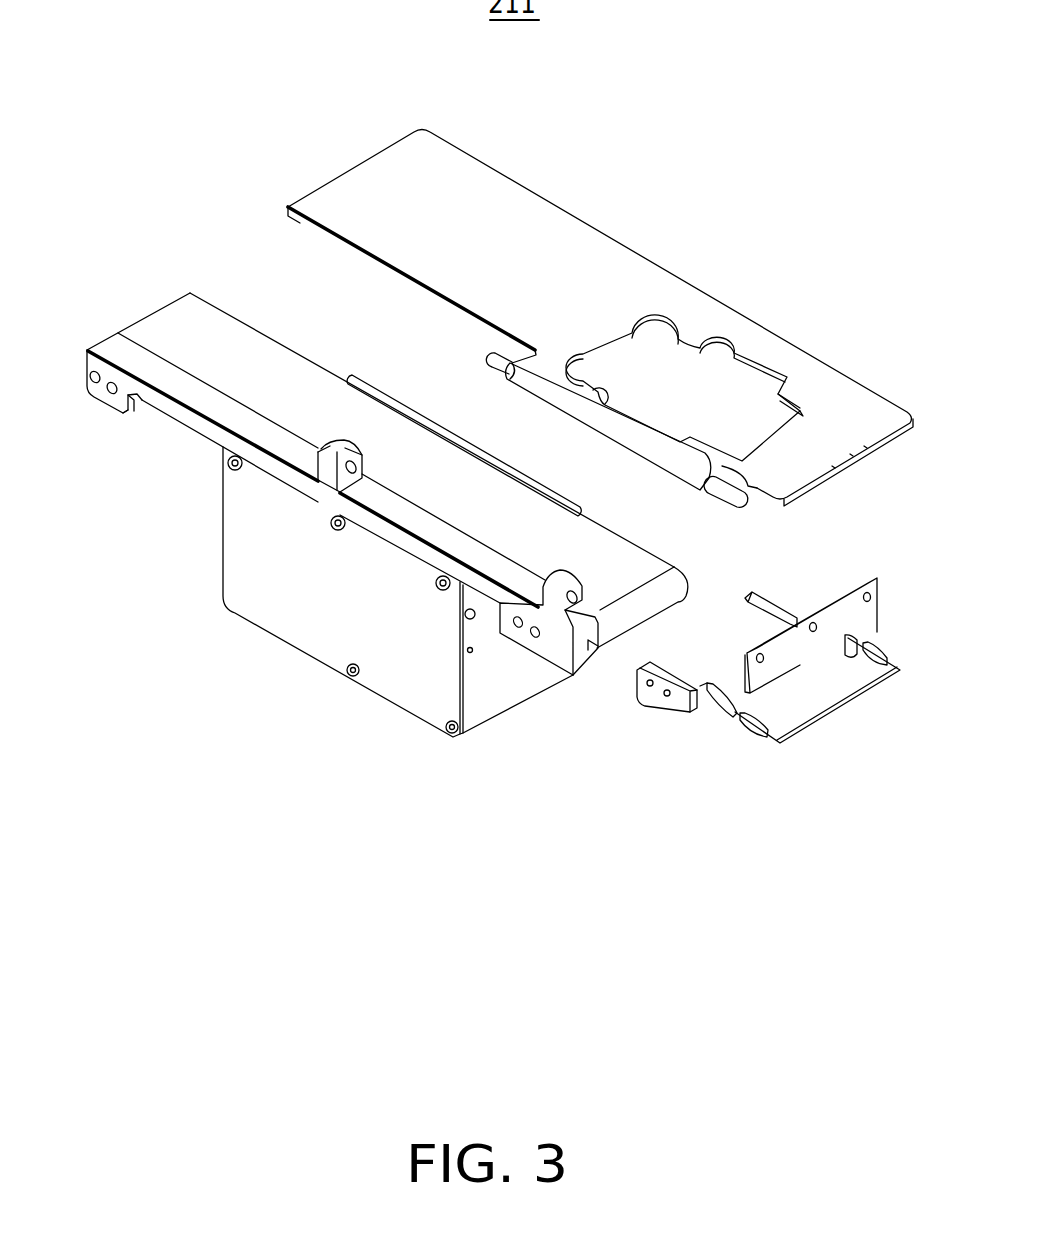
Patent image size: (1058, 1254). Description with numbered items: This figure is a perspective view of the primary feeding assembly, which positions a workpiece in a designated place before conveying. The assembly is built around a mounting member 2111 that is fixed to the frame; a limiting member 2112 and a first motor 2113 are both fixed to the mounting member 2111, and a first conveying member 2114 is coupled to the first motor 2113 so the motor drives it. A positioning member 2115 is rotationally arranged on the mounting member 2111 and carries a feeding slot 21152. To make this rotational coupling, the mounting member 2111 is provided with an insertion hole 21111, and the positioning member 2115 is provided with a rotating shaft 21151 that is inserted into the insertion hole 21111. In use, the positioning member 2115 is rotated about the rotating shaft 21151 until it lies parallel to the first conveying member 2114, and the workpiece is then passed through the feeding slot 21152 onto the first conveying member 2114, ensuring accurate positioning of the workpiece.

The mounting member 2111 is at (545, 648).
The insertion hole 21111 is at (343, 480).
The limiting member 2112 is at (818, 690).
The first motor 2113 is at (248, 554).
The first conveying member 2114 is at (387, 483).
The positioning member 2115 is at (600, 295).
The rotating shaft 21151 is at (745, 497).
The feeding slot 21152 is at (728, 382).